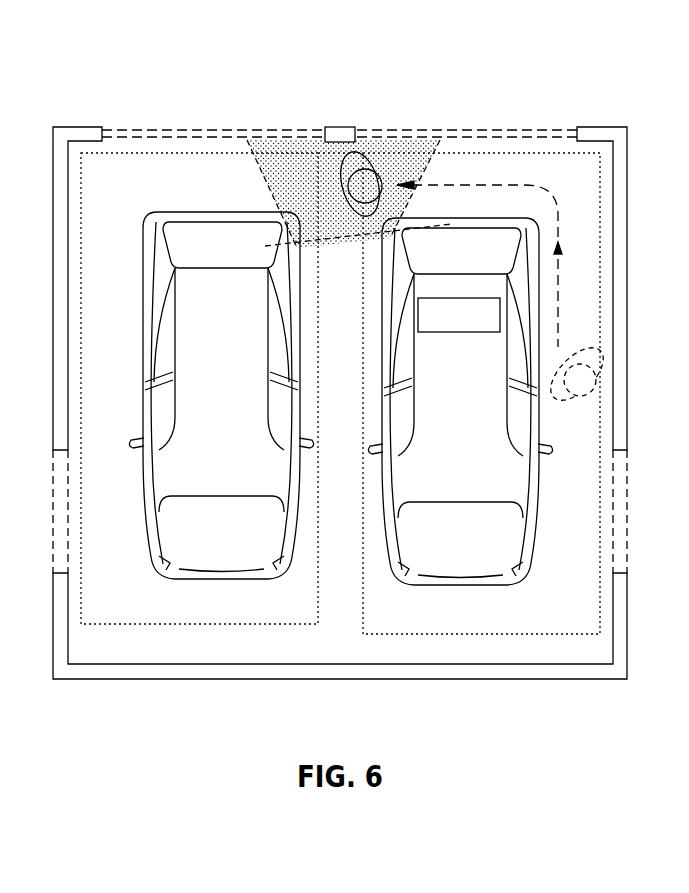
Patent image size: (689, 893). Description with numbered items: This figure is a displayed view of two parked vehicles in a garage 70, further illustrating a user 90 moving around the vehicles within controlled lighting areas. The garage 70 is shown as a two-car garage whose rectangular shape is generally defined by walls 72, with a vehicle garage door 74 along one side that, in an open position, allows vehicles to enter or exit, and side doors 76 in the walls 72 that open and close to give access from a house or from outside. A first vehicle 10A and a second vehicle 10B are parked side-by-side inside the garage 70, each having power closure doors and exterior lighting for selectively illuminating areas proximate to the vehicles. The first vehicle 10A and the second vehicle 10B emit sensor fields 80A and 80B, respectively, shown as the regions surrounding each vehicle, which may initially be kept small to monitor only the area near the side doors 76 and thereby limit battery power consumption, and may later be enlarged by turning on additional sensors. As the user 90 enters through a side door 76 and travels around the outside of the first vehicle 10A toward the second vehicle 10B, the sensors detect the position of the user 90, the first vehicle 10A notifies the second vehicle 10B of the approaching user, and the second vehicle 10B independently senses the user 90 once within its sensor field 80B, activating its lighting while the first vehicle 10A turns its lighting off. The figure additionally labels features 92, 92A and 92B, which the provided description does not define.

The garage 70 is at (342, 359).
The walls 72 is at (68, 317).
The garage door 74 is at (192, 128).
The side door 76 is at (53, 540).
The sensor field 80A is at (458, 634).
The sensor field 80B is at (222, 625).
The user 90 is at (381, 152).
The sensor 92 is at (590, 174).
The travel path 92A is at (433, 170).
The sensor field of view 92B is at (265, 178).
The first vehicle 10A is at (460, 401).
The second vehicle 10B is at (221, 395).